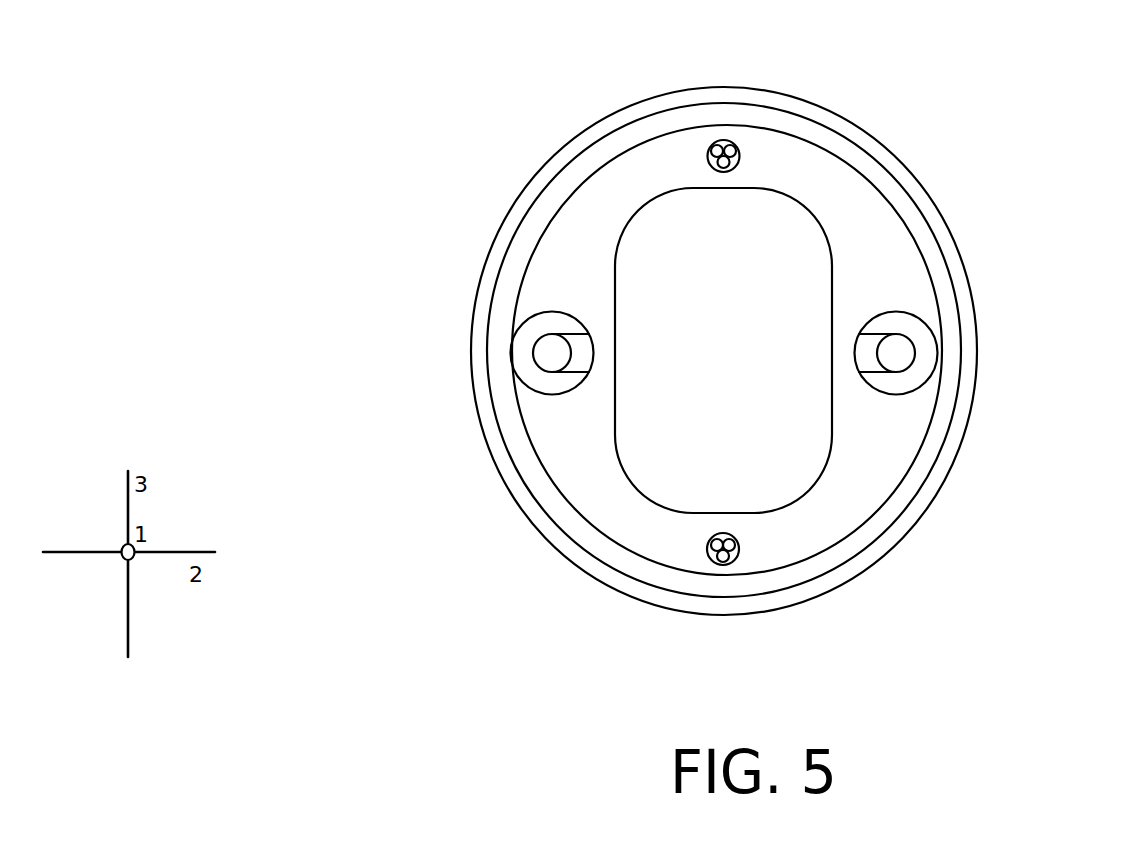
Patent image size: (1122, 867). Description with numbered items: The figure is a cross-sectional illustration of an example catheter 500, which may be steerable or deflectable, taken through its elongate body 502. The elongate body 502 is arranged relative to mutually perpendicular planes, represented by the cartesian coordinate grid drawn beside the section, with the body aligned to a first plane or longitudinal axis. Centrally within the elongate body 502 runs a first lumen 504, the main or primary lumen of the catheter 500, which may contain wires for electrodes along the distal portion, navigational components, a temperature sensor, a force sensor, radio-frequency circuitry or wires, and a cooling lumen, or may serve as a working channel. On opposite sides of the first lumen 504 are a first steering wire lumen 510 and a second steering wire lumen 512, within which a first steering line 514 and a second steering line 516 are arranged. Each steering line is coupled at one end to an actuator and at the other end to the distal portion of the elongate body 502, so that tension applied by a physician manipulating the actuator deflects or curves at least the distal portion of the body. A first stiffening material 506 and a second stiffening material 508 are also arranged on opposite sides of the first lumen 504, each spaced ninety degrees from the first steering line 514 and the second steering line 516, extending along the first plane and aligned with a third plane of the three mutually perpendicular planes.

The catheter 500 is at (348, 112).
The elongate body 502 is at (997, 337).
The first lumen 504 is at (827, 447).
The first stiffening material 506 is at (732, 557).
The second stiffening material 508 is at (728, 146).
The first steering wire lumen 510 is at (920, 364).
The second steering wire lumen 512 is at (530, 381).
The first steering line 514 is at (903, 343).
The second steering line 516 is at (545, 360).